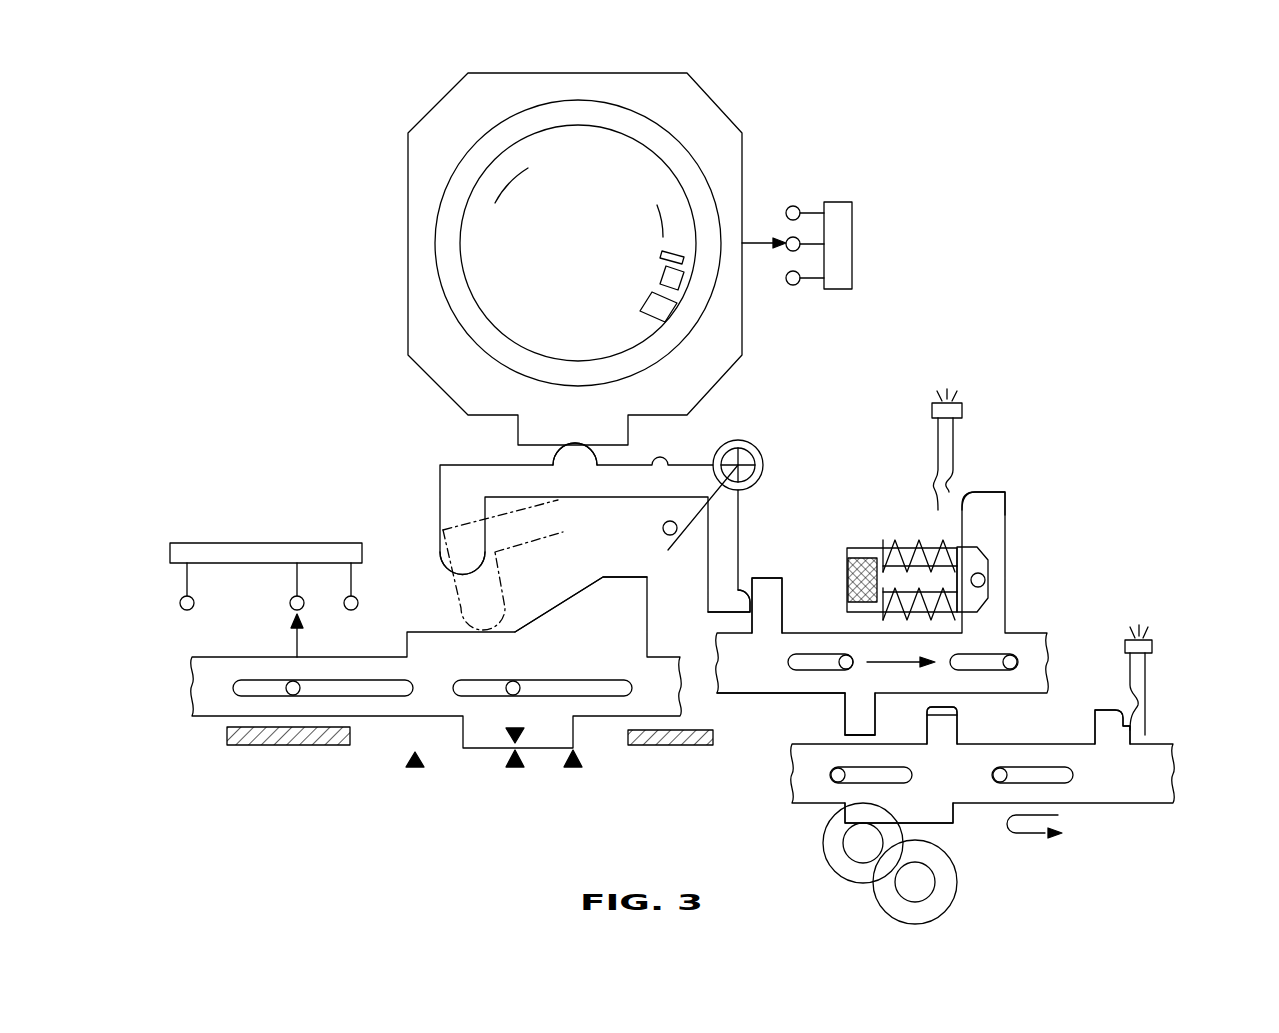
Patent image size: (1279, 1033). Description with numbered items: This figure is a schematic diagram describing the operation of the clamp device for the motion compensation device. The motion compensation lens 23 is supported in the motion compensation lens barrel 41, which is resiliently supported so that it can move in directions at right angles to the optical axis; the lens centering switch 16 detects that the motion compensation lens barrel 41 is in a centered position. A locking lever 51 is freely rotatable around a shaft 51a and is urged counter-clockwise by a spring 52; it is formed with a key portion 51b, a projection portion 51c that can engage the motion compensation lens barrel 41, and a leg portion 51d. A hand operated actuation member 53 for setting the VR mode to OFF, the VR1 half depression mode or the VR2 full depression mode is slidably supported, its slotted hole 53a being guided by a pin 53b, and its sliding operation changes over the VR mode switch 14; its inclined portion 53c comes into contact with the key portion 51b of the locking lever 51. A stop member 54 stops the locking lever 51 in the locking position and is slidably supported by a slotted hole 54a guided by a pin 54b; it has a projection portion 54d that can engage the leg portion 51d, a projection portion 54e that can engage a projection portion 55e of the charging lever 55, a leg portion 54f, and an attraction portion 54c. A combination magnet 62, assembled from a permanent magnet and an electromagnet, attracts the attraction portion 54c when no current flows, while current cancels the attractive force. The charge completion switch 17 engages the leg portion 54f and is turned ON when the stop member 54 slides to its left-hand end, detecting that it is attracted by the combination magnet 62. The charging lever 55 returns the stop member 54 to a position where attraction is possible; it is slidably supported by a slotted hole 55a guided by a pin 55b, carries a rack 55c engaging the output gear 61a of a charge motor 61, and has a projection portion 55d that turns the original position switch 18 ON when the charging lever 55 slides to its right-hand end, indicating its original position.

The VR mode switch 14 is at (202, 550).
The lens centering switch 16 is at (845, 237).
The charge completion switch 17 is at (960, 412).
The original position switch 18 is at (1148, 643).
The motion compensation lens 23 is at (467, 237).
The motion compensation lens barrel 41 is at (584, 76).
The locking lever 51 is at (447, 475).
The shaft 51a is at (743, 443).
The key portion 51b is at (438, 568).
The projection portion 51c is at (563, 460).
The leg portion 51d is at (713, 593).
The spring 52 is at (692, 517).
The hand operated actuation member 53 is at (203, 712).
The slotted hole 53a is at (257, 682).
The pin 53b is at (300, 685).
The inclined portion 53c is at (560, 600).
The stop member 54 is at (1000, 515).
The slotted hole 54a is at (747, 693).
The pin 54b is at (832, 693).
The attraction portion 54c is at (980, 565).
The projection portion 54d is at (762, 587).
The projection portion 54e is at (863, 720).
The leg portion 54f is at (983, 495).
The charging lever 55 is at (1162, 775).
The slotted hole 55a is at (860, 787).
The pin 55b is at (833, 777).
The rack 55c is at (947, 825).
The projection portion 55d is at (1108, 712).
The projection portion 55e is at (957, 727).
The charge motor 61 is at (938, 902).
The output gear 61a is at (828, 860).
The combination magnet 62 is at (860, 548).